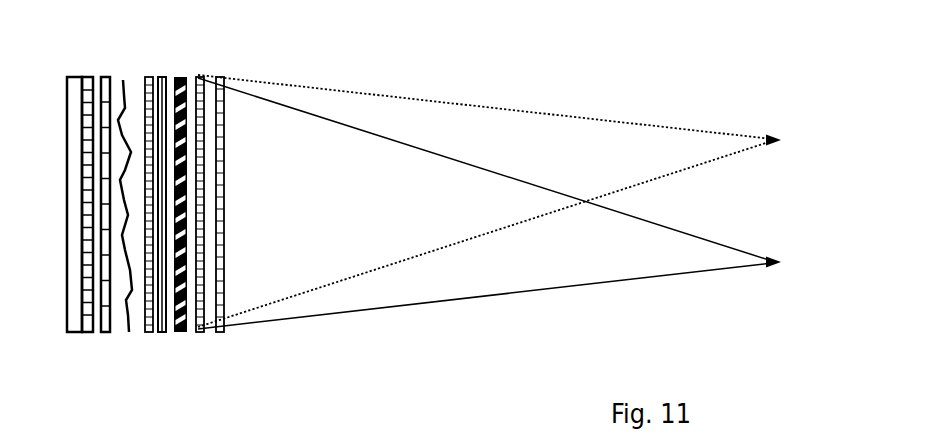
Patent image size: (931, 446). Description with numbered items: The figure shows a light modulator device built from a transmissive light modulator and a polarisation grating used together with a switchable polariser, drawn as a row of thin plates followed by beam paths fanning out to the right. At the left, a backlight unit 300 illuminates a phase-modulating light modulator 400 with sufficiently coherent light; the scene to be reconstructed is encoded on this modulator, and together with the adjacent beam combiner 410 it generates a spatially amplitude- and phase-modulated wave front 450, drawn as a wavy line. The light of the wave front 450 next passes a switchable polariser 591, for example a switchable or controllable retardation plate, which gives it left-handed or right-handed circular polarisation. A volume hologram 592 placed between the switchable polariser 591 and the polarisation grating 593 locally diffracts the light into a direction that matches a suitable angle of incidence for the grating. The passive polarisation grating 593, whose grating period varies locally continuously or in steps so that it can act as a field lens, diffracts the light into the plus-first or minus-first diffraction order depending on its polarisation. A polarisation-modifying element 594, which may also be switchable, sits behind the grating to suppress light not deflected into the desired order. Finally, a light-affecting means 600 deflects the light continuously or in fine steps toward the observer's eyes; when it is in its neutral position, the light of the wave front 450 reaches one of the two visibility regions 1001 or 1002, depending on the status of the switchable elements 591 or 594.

The backlight unit 300 is at (74, 80).
The phase-modulating light modulator 400 is at (88, 323).
The beam combiner 410 is at (109, 333).
The wave front 450 is at (123, 79).
The switchable polariser 591 is at (149, 335).
The volume hologram 592 is at (162, 77).
The polarisation grating 593 is at (182, 334).
The polarisation-modifying element 594 is at (199, 76).
The light-affecting means 600 is at (233, 69).
The visibility region 1001 is at (798, 110).
The visibility region 1002 is at (774, 266).